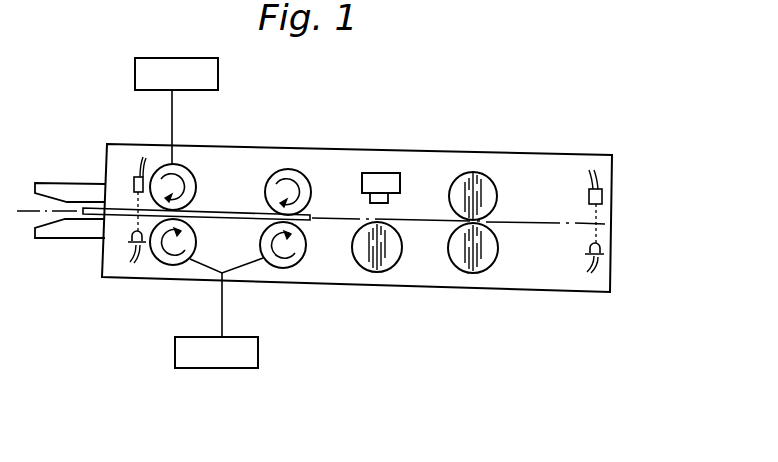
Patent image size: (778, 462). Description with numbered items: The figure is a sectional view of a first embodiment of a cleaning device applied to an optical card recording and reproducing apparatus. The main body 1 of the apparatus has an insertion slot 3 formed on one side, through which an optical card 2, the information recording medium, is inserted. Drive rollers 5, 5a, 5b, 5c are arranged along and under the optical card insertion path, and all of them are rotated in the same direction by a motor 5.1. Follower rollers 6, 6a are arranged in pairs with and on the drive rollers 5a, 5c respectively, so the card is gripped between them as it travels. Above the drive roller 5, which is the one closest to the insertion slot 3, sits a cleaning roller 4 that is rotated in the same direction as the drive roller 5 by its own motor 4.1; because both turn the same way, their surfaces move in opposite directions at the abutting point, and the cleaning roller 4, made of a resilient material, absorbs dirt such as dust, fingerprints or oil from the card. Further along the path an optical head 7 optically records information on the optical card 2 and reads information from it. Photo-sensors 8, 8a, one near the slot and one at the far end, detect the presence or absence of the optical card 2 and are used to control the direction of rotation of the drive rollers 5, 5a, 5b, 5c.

The main body 1 is at (533, 154).
The optical card 2 is at (230, 210).
The insertion slot 3 is at (70, 193).
The cleaning roller 4 is at (178, 172).
The motor 4.1 is at (163, 44).
The drive roller 5 is at (178, 270).
The motor 5.1 is at (197, 368).
The drive roller 5a is at (285, 268).
The drive roller 5b is at (377, 273).
The drive roller 5c is at (475, 274).
The follower roller 6 is at (292, 170).
The follower roller 6a is at (478, 172).
The optical head 7 is at (383, 180).
The photo-sensor 8 is at (136, 177).
The photo-sensor 8a is at (603, 197).